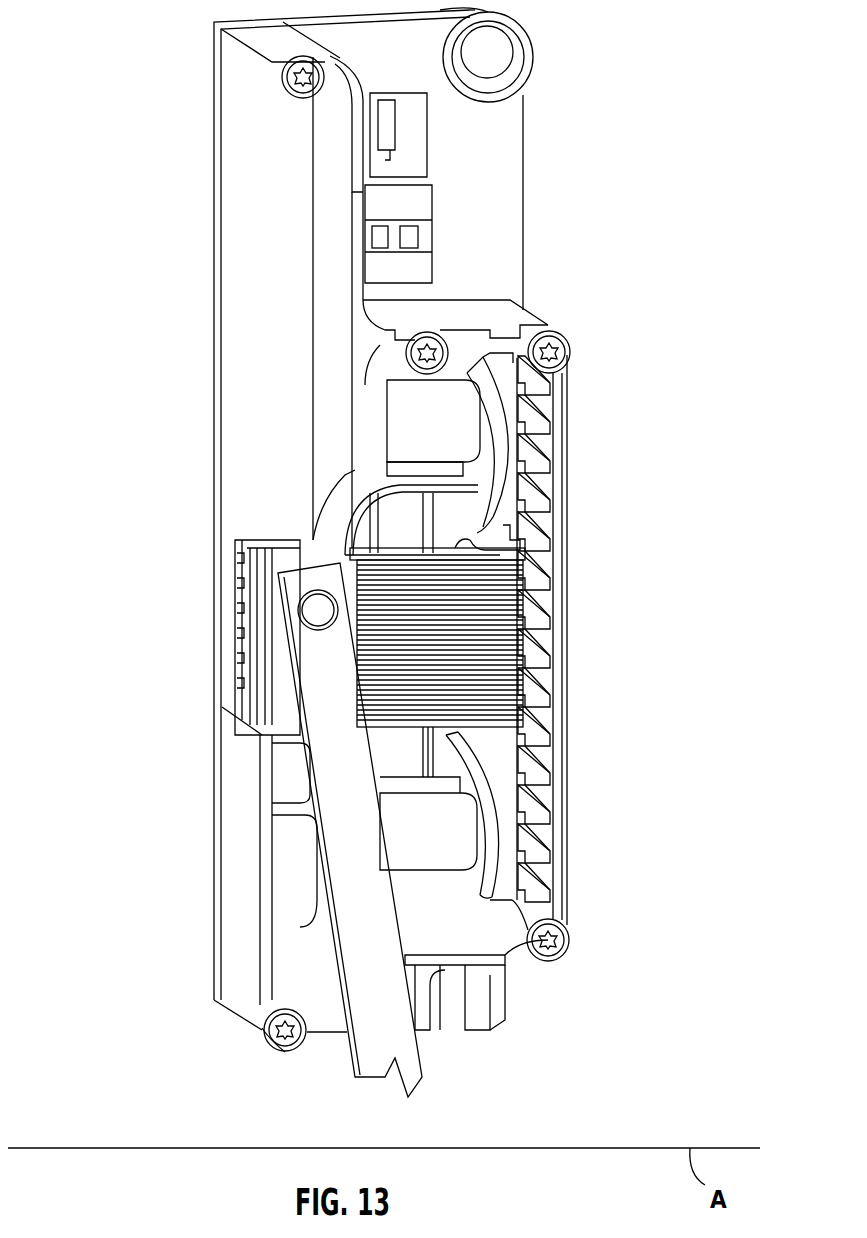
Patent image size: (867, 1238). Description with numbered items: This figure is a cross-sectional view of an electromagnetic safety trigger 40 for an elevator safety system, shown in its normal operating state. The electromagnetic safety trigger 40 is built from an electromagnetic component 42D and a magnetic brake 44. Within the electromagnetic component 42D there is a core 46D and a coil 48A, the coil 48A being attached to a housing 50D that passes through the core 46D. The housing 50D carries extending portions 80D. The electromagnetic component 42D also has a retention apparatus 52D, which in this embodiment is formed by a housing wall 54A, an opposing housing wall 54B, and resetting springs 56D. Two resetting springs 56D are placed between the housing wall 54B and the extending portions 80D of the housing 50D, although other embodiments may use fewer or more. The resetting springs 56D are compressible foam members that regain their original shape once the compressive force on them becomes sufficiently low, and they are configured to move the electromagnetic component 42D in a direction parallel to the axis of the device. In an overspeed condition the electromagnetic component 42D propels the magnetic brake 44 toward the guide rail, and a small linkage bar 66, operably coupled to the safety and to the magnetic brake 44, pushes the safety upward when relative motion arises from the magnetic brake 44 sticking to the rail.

The electromagnetic safety trigger 40 is at (650, 66).
The retention apparatus 52D is at (467, 285).
The resetting spring 56D is at (468, 410).
The extending portions 80D is at (508, 428).
The opposing housing wall 54B is at (325, 415).
The housing 50D is at (505, 523).
The coil 48A is at (395, 523).
The housing wall 54A is at (570, 545).
The electromagnetic component 42D is at (578, 633).
The magnetic brake 44 is at (290, 695).
The core 46D is at (493, 710).
The linkage bar 66 is at (350, 1060).